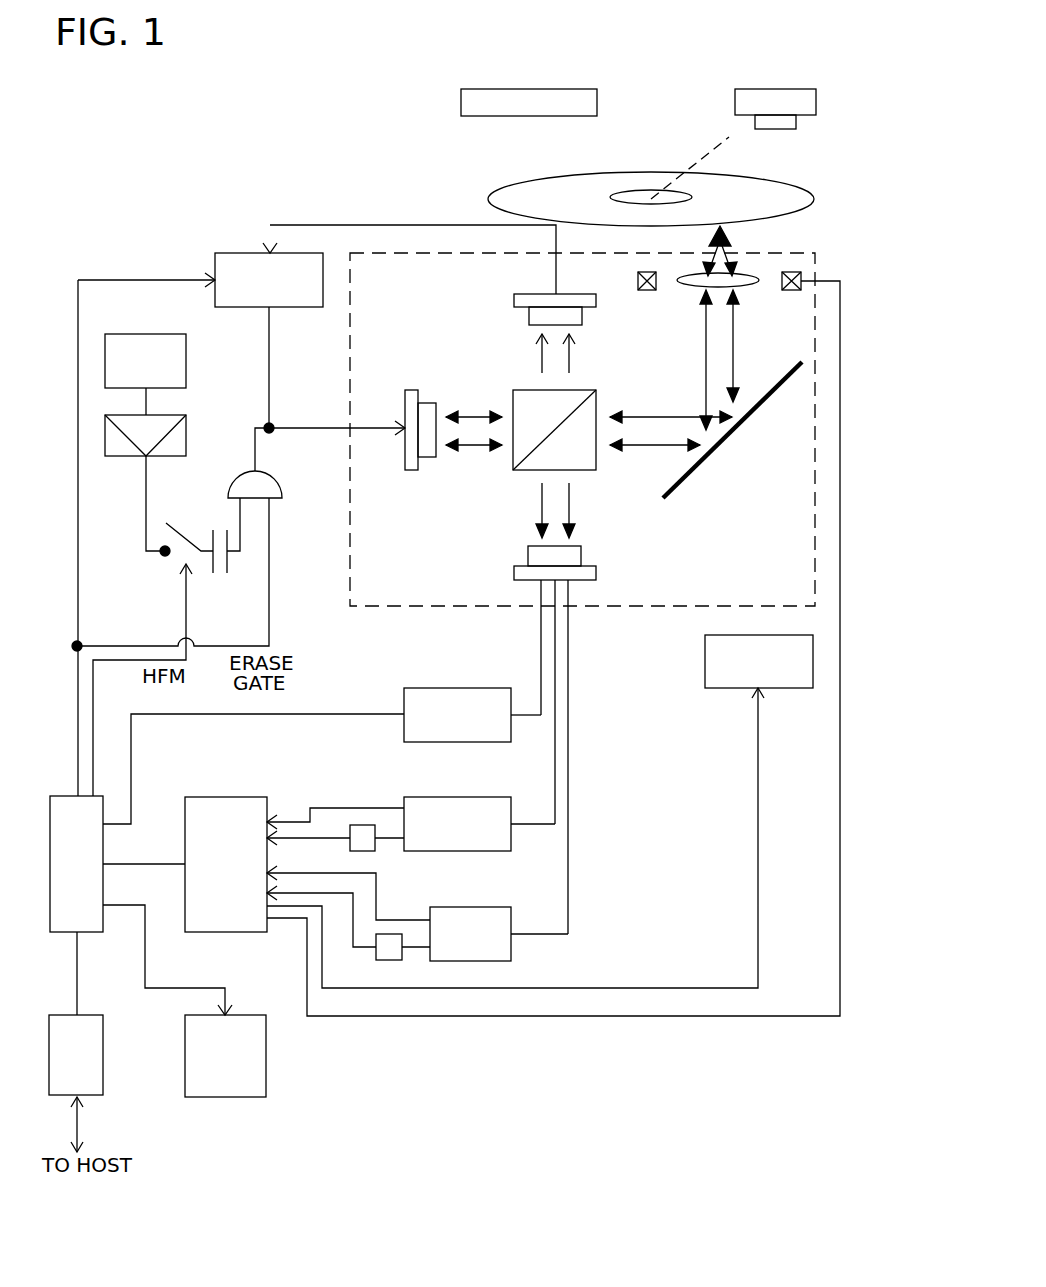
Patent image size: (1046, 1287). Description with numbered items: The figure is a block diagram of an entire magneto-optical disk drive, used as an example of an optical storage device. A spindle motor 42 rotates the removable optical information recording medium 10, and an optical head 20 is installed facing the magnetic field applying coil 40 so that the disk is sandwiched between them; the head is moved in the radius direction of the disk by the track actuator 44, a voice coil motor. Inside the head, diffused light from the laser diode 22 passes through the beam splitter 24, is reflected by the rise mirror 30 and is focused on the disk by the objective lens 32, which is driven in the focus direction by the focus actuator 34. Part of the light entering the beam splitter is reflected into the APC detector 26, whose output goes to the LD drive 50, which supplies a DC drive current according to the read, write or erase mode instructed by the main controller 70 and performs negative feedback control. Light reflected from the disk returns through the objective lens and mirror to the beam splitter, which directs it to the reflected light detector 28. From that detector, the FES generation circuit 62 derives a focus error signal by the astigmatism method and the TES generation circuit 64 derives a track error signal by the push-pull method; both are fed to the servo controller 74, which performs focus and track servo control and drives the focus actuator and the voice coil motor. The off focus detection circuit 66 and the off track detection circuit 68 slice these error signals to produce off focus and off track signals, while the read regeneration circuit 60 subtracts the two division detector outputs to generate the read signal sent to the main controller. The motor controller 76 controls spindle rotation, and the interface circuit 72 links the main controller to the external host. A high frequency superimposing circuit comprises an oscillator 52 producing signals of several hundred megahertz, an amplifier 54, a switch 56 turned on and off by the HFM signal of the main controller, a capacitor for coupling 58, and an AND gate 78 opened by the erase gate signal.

The optical information recording medium 10 is at (490, 196).
The optical head 20 is at (388, 600).
The laser diode 22 is at (418, 475).
The beam splitter 24 is at (513, 390).
The APC detector 26 is at (582, 320).
The reflected light detector 28 is at (596, 558).
The rise mirror 30 is at (735, 432).
The objective lens 32 is at (751, 288).
The focus actuator 34 is at (792, 272).
The magnetic field applying coil 40 is at (577, 89).
The spindle motor 42 is at (782, 89).
The track actuator 44 is at (717, 690).
The LD drive 50 is at (236, 253).
The oscillator 52 is at (189, 361).
The amplifier 54 is at (189, 436).
The switch 56 is at (180, 522).
The capacitor for coupling 58 is at (213, 578).
The read regeneration circuit 60 is at (478, 688).
The FES generation circuit 62 is at (478, 797).
The TES generation circuit 64 is at (478, 907).
The off focus detection circuit 66 is at (375, 848).
The off track detection circuit 68 is at (393, 960).
The main controller 70 is at (58, 935).
The interface circuit 72 is at (103, 1097).
The servo controller 74 is at (248, 797).
The motor controller 76 is at (253, 1097).
The AND gate 78 is at (280, 493).